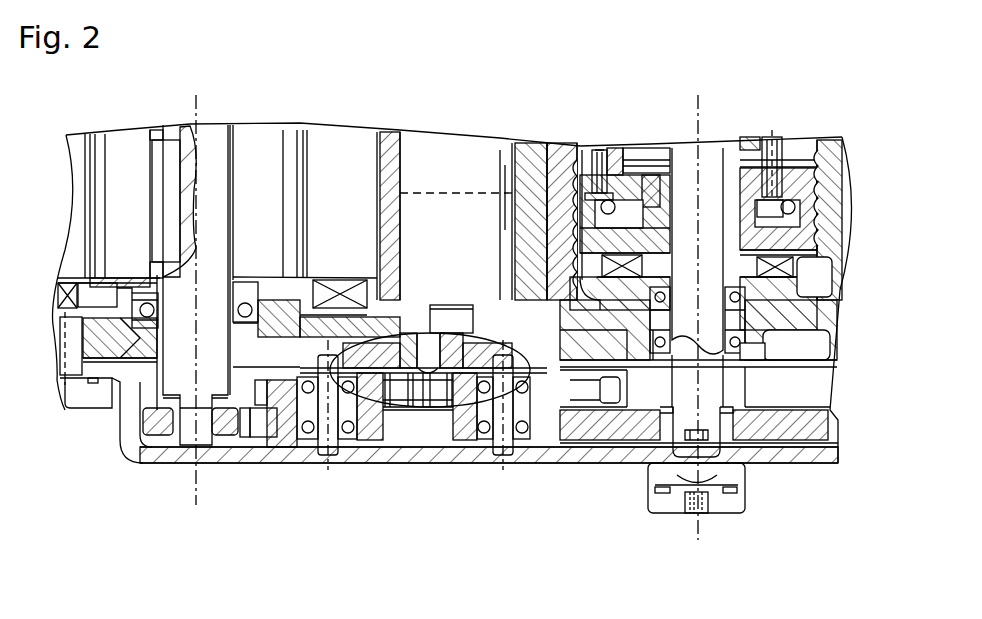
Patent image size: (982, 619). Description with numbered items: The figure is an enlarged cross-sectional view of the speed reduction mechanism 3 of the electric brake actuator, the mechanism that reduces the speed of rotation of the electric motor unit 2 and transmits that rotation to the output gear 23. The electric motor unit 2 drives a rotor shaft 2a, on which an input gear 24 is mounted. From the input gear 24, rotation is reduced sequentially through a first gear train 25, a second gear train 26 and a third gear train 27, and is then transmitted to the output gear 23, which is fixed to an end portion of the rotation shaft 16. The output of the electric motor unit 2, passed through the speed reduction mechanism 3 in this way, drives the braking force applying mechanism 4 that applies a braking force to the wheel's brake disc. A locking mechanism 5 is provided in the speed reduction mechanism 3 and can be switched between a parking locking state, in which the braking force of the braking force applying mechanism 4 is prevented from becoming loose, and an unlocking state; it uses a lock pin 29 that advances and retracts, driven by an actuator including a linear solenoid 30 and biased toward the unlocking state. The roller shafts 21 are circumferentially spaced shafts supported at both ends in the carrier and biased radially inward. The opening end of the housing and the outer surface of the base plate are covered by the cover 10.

The electric motor unit 2 is at (268, 130).
The rotor shaft 2a is at (213, 130).
The linear solenoid 30 is at (452, 207).
The rotation shaft 16 is at (686, 150).
The roller shaft 21 is at (778, 143).
The braking force applying mechanism 4 is at (810, 375).
The output gear 23 is at (783, 427).
The cover 10 is at (728, 470).
The third gear train 27 is at (577, 440).
The lock pin 29 is at (437, 410).
The locking mechanism 5 is at (421, 414).
The second gear train 26 is at (398, 414).
The speed reduction mechanism 3 is at (357, 487).
The first gear train 25 is at (240, 440).
The input gear 24 is at (163, 430).